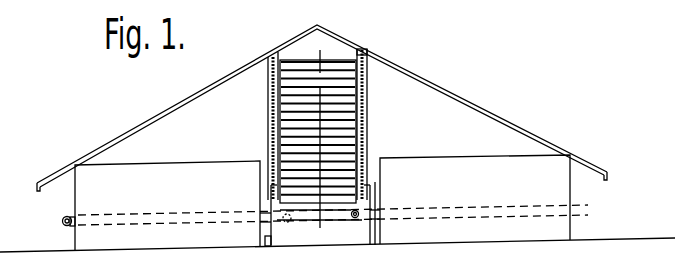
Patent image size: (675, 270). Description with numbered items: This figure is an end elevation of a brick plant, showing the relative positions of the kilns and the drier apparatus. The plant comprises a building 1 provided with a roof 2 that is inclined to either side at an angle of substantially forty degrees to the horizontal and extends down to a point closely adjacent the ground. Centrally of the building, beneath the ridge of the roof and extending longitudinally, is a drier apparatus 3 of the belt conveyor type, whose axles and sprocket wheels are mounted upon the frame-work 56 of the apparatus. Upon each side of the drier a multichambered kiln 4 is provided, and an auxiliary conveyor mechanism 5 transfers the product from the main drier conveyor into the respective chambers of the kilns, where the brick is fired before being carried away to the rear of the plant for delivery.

The building 1 is at (468, 116).
The roof 2 is at (452, 83).
The drier apparatus 3 is at (344, 60).
The multichambered kiln 4 is at (227, 163).
The auxiliary conveyor mechanism 5 is at (292, 218).
The frame-work 56 is at (368, 91).